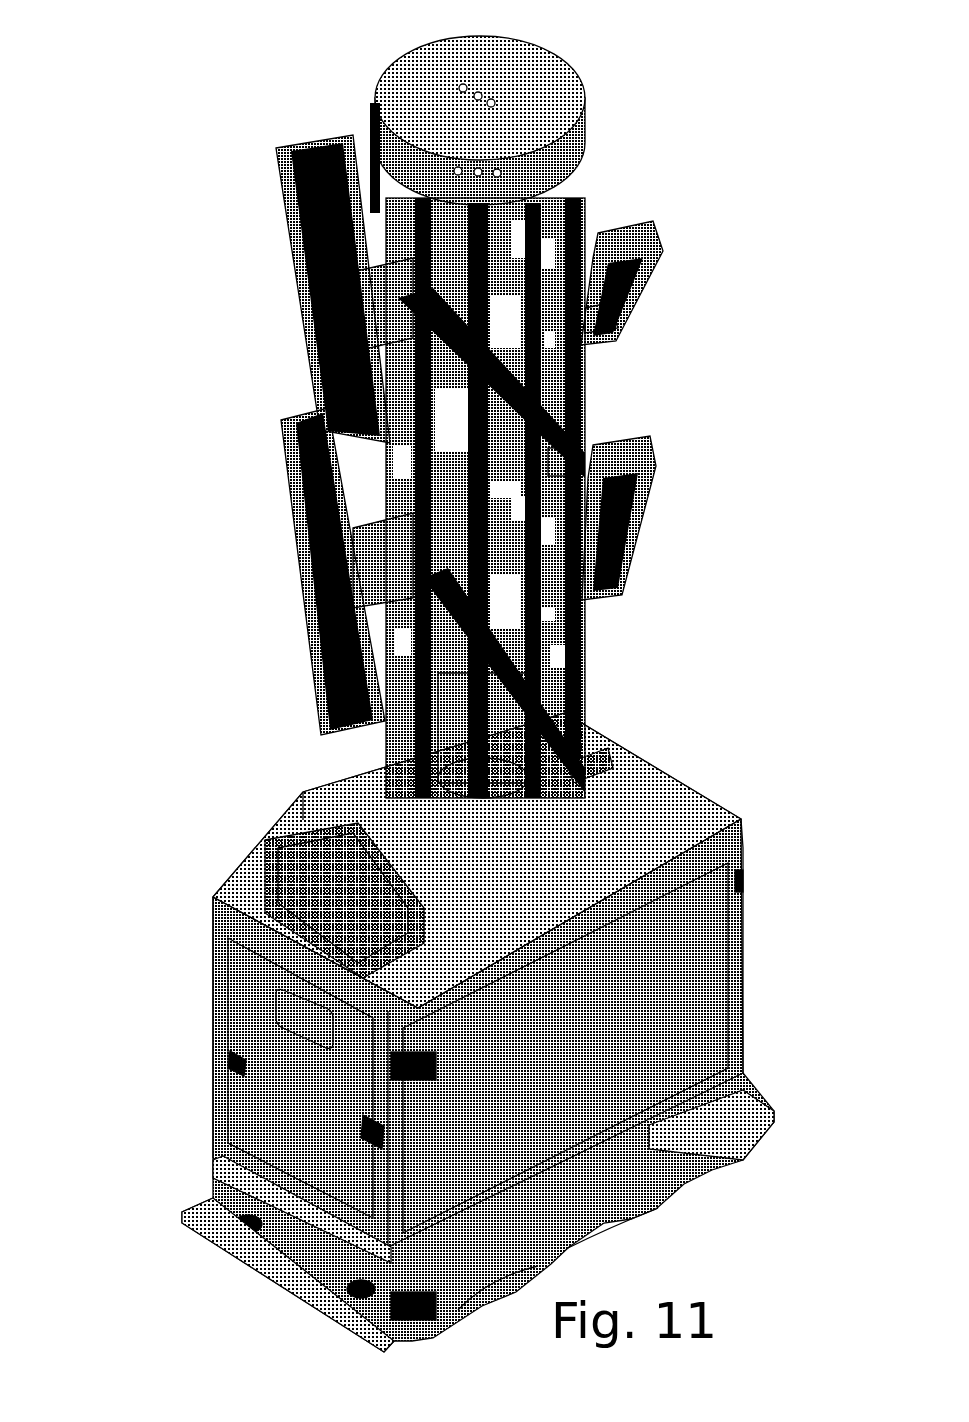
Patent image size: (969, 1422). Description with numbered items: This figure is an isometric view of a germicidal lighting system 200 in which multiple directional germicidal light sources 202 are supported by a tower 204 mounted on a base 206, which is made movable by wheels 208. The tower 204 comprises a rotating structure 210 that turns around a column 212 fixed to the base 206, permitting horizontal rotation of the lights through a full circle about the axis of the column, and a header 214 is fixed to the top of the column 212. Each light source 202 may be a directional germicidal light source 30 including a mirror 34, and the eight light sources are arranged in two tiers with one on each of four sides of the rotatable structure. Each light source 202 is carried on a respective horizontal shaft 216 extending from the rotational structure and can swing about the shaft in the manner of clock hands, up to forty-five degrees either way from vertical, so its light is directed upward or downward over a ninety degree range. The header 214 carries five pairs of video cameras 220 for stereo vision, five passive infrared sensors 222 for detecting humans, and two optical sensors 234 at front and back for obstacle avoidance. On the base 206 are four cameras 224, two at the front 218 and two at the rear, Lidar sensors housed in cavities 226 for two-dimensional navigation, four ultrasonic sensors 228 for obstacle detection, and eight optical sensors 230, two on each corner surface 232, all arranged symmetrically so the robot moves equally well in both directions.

The germicidal lighting system 200 is at (203, 170).
The directional germicidal light source 202 is at (495, 429).
The tower 204 is at (597, 474).
The rotating structure 210 is at (580, 195).
The base 206 is at (205, 897).
The wheels 208 is at (582, 1239).
The column 212 is at (467, 687).
The header 214 is at (459, 110).
The shaft 216 is at (275, 862).
The front of the base 218 is at (240, 1102).
The video cameras 220 is at (483, 95).
The passive infrared sensors 222 is at (450, 143).
The cameras 224 is at (227, 1057).
The cavities 226 is at (230, 1175).
The ultrasonic sensors 228 is at (233, 1236).
The optical sensors 230 is at (733, 880).
The corner surface 232 is at (738, 948).
The optical sensors 234 is at (367, 143).
The directional germicidal light source 30 is at (633, 283).
The mirror 34 is at (625, 298).